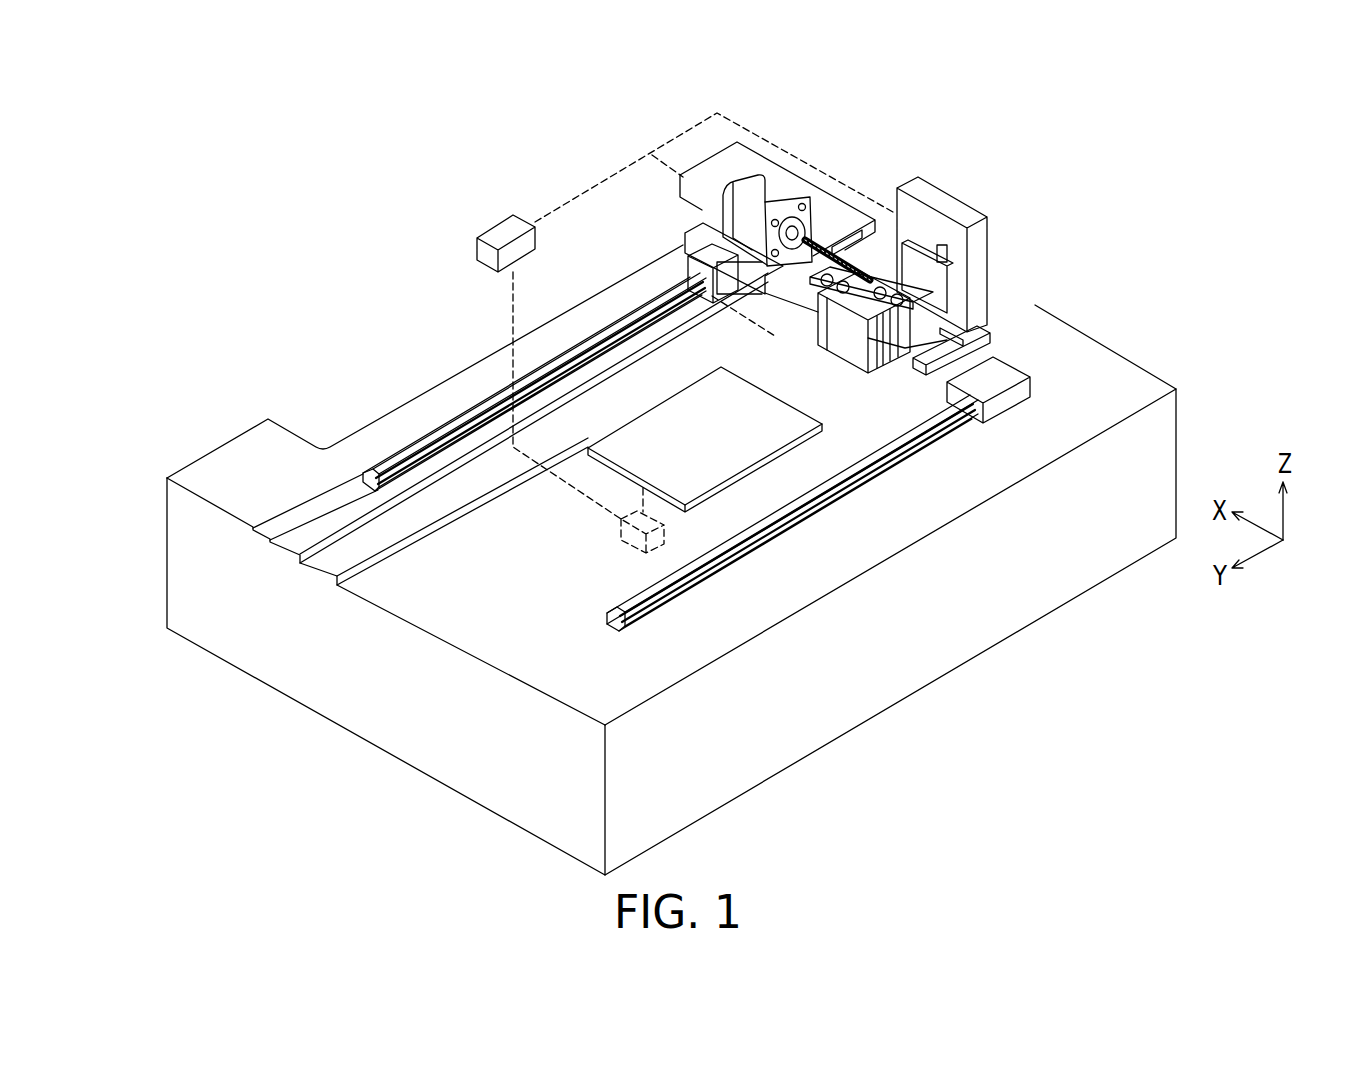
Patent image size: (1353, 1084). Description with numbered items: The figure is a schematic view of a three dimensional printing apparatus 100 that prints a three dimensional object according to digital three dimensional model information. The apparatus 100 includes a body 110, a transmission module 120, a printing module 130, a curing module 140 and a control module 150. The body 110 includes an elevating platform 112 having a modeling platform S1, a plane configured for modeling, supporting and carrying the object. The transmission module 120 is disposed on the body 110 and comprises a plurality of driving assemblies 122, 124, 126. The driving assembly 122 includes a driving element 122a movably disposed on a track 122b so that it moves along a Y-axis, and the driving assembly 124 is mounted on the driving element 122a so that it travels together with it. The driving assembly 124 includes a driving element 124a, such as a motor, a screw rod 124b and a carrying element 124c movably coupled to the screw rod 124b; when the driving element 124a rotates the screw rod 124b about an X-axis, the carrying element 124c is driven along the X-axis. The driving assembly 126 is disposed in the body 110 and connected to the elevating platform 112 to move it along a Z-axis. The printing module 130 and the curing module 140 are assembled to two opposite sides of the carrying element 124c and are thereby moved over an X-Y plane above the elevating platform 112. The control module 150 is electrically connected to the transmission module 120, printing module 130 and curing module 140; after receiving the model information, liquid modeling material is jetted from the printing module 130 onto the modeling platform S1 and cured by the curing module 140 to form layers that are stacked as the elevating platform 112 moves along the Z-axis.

The 3D printing apparatus 100 is at (1118, 804).
The body 110 is at (1134, 376).
The elevating platform 112 is at (759, 443).
The transmission module 120 is at (177, 196).
The driving assembly 122 is at (410, 330).
The driving element 122a is at (685, 262).
The track 122b is at (745, 537).
The driving assembly 124 is at (1000, 107).
The driving element 124a is at (763, 192).
The screw rod 124b is at (823, 235).
The carrying element 124c is at (918, 266).
The driving assembly 126 is at (620, 531).
The printing module 130 is at (861, 363).
The curing module 140 is at (980, 253).
The control module 150 is at (503, 226).
The modeling platform S1 is at (775, 392).